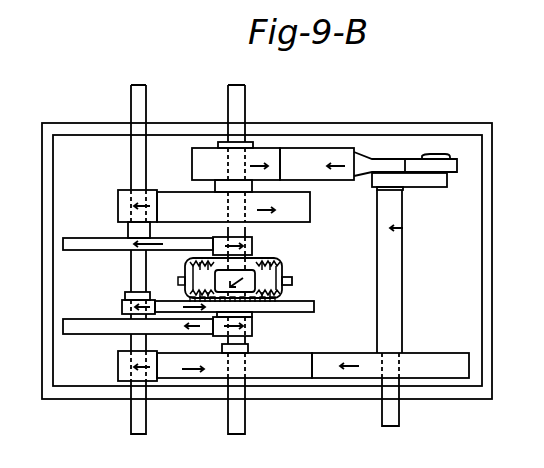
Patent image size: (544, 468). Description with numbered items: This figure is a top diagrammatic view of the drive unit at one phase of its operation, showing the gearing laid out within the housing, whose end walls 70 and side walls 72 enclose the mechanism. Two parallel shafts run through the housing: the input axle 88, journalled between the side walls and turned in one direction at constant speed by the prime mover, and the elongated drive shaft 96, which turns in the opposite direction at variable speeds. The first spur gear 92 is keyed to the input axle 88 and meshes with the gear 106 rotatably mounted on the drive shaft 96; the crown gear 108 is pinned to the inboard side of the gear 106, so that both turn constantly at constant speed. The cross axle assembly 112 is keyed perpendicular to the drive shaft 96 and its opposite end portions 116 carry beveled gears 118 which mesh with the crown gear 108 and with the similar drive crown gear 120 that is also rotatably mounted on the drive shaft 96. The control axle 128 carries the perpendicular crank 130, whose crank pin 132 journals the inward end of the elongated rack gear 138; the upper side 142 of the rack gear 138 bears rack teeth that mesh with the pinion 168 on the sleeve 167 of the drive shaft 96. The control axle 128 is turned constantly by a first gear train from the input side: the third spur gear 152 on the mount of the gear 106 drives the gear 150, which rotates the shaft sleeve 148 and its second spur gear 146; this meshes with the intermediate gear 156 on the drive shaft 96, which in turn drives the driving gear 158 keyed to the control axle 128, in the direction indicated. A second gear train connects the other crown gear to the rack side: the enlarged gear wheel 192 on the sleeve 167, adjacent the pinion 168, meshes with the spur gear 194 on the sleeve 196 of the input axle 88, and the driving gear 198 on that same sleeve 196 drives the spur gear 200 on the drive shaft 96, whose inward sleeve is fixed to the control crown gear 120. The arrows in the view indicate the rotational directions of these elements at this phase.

The end walls 70 is at (493, 300).
The side walls 72 is at (330, 392).
The input axle 88 is at (144, 431).
The first spur gear 92 is at (122, 306).
The drive shaft 96 is at (246, 427).
The gear 106 is at (314, 308).
The crown gear 108 is at (278, 300).
The cross axle assembly 112 is at (282, 270).
The end portions 116 is at (200, 282).
The beveled gears 118 is at (292, 292).
The drive crown gear 120 is at (283, 261).
The control axle 128 is at (393, 306).
The crank 130 is at (435, 189).
The crank pin 132 is at (447, 175).
The rack gear 138 is at (383, 166).
The upper side 142 is at (320, 157).
The second spur gear 146 is at (118, 378).
The shaft sleeve 148 is at (118, 369).
The gear 150 is at (99, 355).
The third spur gear 152 is at (266, 337).
The intermediate gear 156 is at (215, 371).
The driving gear 158 is at (432, 375).
The sleeve 167 is at (250, 187).
The pinion 168 is at (208, 152).
The gear wheel 192 is at (303, 214).
The spur gear 194 is at (118, 200).
The sleeve 196 is at (128, 232).
The driving gear 198 is at (88, 241).
The spur gear 200 is at (265, 242).